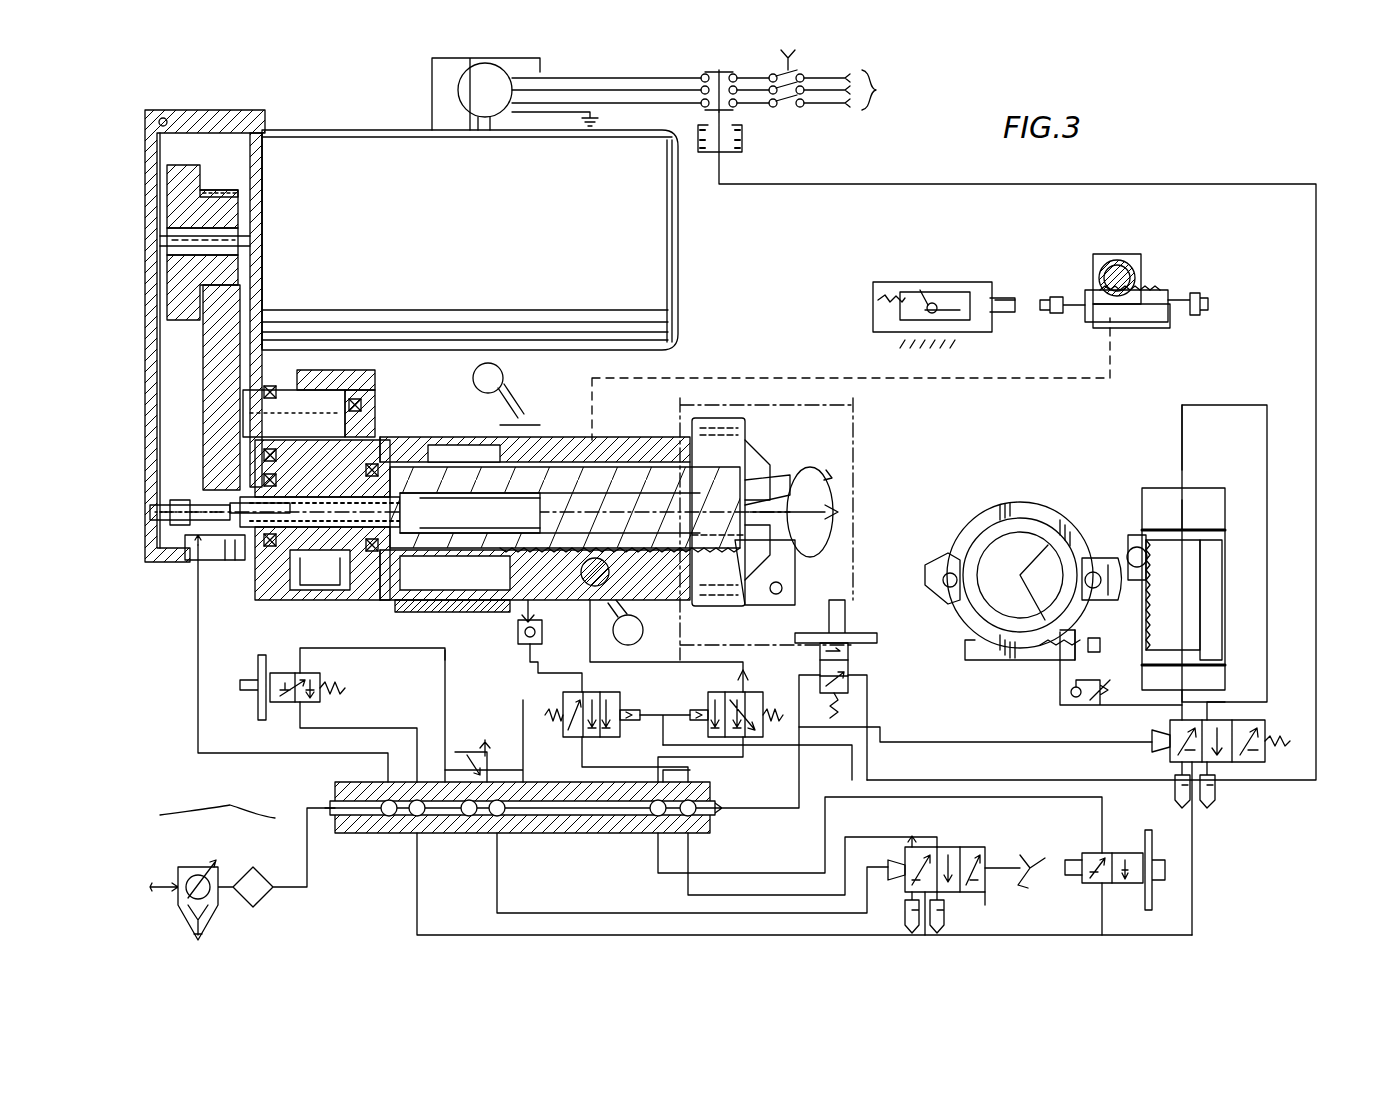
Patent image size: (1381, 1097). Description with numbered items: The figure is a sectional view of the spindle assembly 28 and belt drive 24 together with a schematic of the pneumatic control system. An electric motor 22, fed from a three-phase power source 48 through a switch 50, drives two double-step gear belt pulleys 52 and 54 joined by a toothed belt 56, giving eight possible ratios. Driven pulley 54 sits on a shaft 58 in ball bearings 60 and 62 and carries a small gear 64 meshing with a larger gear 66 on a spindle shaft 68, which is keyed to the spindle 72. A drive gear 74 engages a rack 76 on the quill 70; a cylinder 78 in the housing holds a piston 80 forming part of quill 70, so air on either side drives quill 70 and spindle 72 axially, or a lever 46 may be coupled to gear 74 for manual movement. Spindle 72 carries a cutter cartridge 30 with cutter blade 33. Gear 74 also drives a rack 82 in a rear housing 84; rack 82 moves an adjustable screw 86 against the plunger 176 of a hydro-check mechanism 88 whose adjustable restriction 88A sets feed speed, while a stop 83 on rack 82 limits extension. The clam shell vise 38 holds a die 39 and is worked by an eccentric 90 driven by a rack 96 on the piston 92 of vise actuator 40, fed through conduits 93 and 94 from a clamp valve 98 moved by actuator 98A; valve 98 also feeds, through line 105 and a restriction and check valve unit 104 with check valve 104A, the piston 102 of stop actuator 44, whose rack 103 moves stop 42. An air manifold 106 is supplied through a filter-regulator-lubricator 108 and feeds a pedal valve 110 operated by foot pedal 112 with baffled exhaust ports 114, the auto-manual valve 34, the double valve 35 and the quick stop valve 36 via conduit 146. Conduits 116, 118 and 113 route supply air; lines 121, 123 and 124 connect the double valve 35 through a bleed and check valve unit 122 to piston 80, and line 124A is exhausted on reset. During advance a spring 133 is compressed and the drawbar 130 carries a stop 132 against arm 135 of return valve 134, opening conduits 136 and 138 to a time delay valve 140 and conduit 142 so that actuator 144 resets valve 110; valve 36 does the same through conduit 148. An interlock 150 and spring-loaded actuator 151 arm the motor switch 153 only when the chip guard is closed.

The electric motor 22 is at (470, 240).
The belt drive 24 is at (240, 116).
The spindle assembly 28 is at (580, 437).
The cutter cartridge 30 is at (745, 426).
The cutter blade 33 is at (792, 488).
The auto-manual valve 34 is at (1125, 848).
The double valve 35 is at (616, 693).
The manual quick stop valve 36 is at (280, 699).
The clam shell type vise 38 is at (1012, 495).
The die 39 is at (975, 603).
The vise actuator 40 is at (1160, 483).
The stop 42 is at (1022, 575).
The stop actuator 44 is at (1060, 655).
The lever 46 is at (505, 372).
The 3-phase power source 48 is at (884, 90).
The switch 50 is at (790, 107).
The gear belt pulley 52 is at (190, 163).
The driven pulley 54 is at (158, 372).
The toothed belt 56 is at (238, 190).
The shaft 58 is at (370, 406).
The ball bearing 60 is at (288, 378).
The ball bearing 62 is at (392, 470).
The small gear 64 is at (352, 382).
The larger gear 66 is at (318, 580).
The spindle shaft 68 is at (440, 456).
The quill 70 is at (620, 420).
The spindle 72 is at (628, 480).
The drive gear 74 is at (1115, 233).
The rack 76 is at (585, 583).
The cylinder 78 is at (455, 573).
The piston 80 is at (452, 605).
The rack 82 is at (1148, 288).
The stop 83 is at (1196, 291).
The housing 84 is at (1150, 328).
The adjustable screw 86 is at (1050, 293).
The hydro-check feed and rapid travel adjustment mechanism 88 is at (965, 283).
The adjustable restriction 88A is at (920, 298).
The eccentric 90 is at (1132, 543).
The piston 92 is at (1200, 488).
The conduit 93 is at (1182, 690).
The conduit 94 is at (1232, 390).
The rack 96 is at (1160, 608).
The clamp valve 98 is at (1230, 763).
The actuator 98A is at (1160, 750).
The piston 102 is at (1097, 600).
The rack 103 is at (1060, 660).
The adjustable restriction and check valve unit 104 is at (1115, 740).
The check valve 104A is at (1074, 695).
The line 105 is at (1210, 700).
The air manifold 106 is at (550, 831).
The filter-regulator-lubricator 108 is at (224, 861).
The valve 110 is at (985, 891).
The foot pedal 112 is at (1015, 851).
The line 113 is at (795, 868).
The baffled exhaust port 114 is at (945, 913).
The conduit 116 is at (417, 893).
The conduit 118 is at (645, 873).
The line 121 is at (718, 663).
The bleed and check valve unit 122 is at (550, 656).
The line 123 is at (500, 607).
The line 124 is at (368, 646).
The line 124A is at (755, 798).
The drawbar 130 is at (781, 572).
The stop 132 is at (160, 505).
The spring 133 is at (515, 426).
The return valve 134 is at (190, 565).
The arm 135 is at (235, 565).
The conduit 136 is at (198, 716).
The conduit 138 is at (523, 695).
The time delay valve 140 is at (488, 746).
The conduit 142 is at (552, 903).
The actuator 144 is at (895, 845).
The conduit 146 is at (330, 748).
The conduit 148 is at (411, 676).
The interlock 150 is at (850, 656).
The actuator 151 is at (742, 150).
The switch 153 is at (700, 76).
The plunger 176 is at (1000, 313).